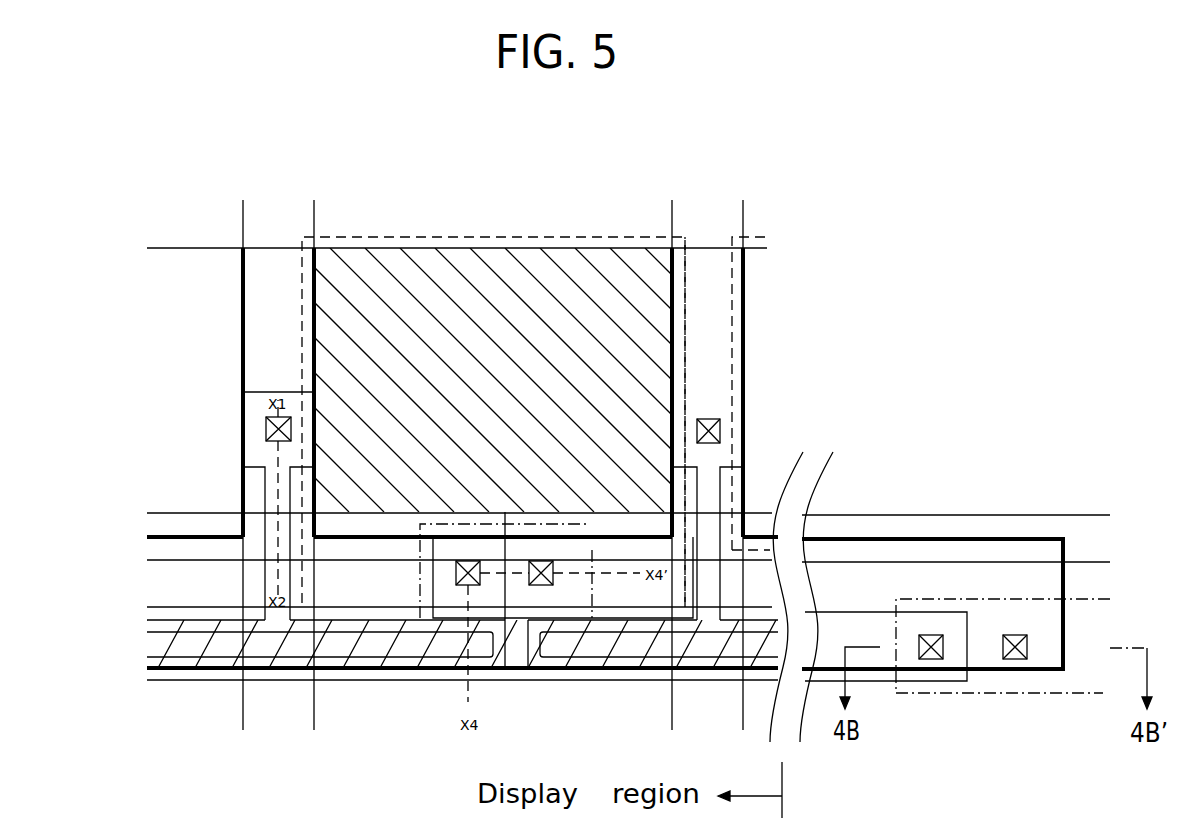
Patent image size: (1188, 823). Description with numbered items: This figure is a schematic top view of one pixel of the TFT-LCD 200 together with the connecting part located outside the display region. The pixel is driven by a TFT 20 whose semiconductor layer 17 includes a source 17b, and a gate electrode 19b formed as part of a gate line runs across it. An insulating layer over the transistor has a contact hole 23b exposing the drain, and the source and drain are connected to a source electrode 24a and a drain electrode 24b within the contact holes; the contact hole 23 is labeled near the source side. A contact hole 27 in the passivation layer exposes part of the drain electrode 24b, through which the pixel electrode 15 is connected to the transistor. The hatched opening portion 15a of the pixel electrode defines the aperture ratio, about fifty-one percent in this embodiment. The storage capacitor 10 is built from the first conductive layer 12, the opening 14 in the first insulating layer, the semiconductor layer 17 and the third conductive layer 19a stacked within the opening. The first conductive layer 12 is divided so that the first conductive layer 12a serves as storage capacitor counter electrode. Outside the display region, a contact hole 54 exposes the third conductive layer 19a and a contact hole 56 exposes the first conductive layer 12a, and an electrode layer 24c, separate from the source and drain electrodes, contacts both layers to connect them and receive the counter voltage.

The storage capacitor 10 is at (212, 662).
The first conductive layer 12 is at (150, 556).
The first conductive layer 12a is at (1047, 580).
The opening 14 is at (352, 660).
The pixel electrode 15 is at (685, 281).
The opening portion 15a is at (445, 262).
The semiconductor layer 17 is at (166, 680).
The source 17b is at (265, 460).
The third conductive layer 19a is at (150, 608).
The gate electrode 19b is at (150, 521).
The TFT 20 is at (257, 530).
The contact hole 23 is at (266, 426).
The contact hole 23b is at (468, 562).
The source electrode 24a is at (265, 219).
The drain electrode 24b is at (592, 550).
The electrode layer 24c is at (1053, 695).
The contact hole 27 is at (541, 562).
The contact hole 54 is at (931, 659).
The contact hole 56 is at (1015, 659).
The TFT-LCD 200 is at (908, 318).